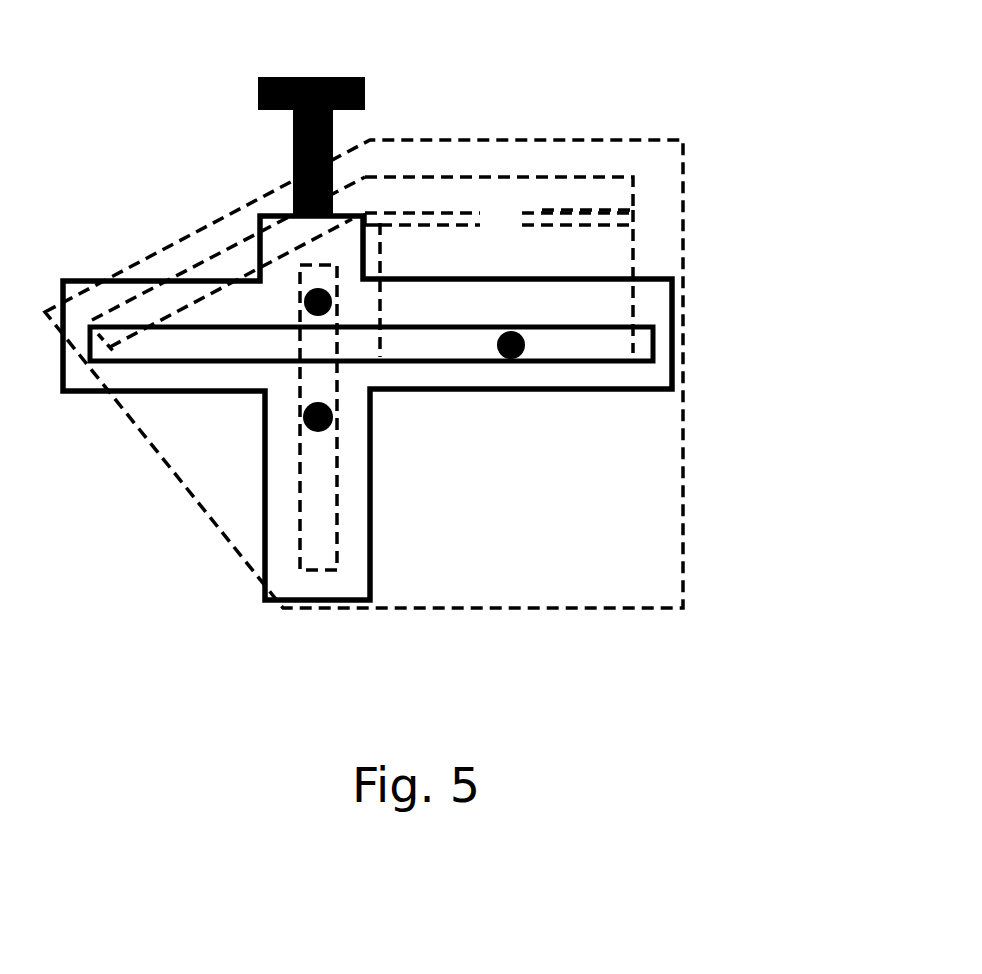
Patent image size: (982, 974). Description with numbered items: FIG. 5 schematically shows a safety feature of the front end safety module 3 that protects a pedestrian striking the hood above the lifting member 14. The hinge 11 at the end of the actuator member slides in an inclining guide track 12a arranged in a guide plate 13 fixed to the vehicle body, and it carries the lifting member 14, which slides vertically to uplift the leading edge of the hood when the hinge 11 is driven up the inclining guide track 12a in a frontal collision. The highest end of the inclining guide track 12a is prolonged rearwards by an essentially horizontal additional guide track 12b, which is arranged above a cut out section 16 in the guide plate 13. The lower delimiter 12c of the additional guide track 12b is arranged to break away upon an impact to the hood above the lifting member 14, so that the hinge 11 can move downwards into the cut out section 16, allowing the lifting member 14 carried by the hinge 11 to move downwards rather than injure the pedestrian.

The front end safety module 3 is at (551, 88).
The hinge 11 is at (527, 360).
The inclining guide track 12a is at (240, 263).
The additional guide track 12b is at (573, 192).
The lower delimiter 12c is at (547, 225).
The guide plate 13 is at (635, 520).
The lifting member 14 is at (280, 463).
The cut out section 16 is at (492, 260).